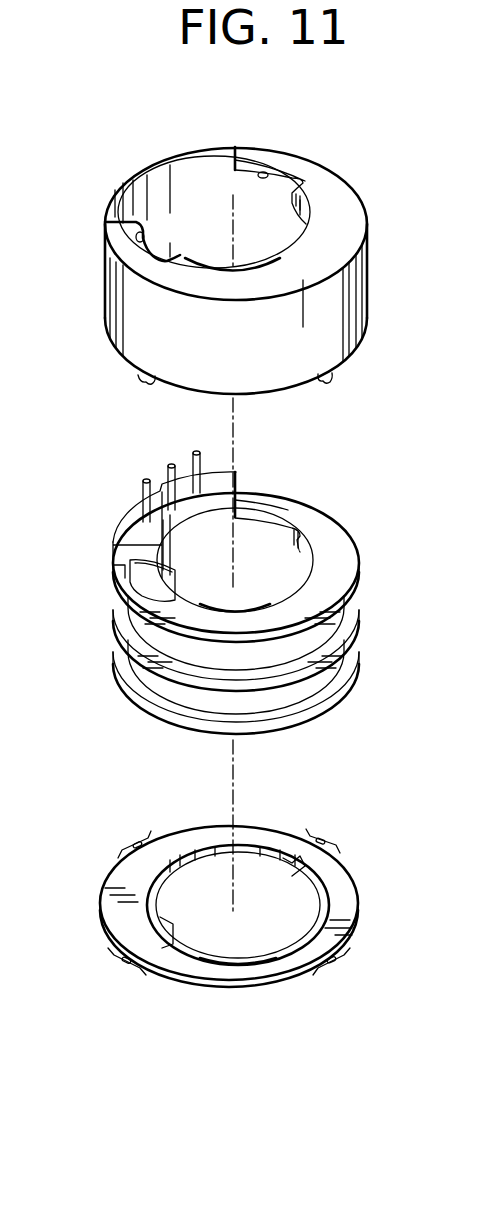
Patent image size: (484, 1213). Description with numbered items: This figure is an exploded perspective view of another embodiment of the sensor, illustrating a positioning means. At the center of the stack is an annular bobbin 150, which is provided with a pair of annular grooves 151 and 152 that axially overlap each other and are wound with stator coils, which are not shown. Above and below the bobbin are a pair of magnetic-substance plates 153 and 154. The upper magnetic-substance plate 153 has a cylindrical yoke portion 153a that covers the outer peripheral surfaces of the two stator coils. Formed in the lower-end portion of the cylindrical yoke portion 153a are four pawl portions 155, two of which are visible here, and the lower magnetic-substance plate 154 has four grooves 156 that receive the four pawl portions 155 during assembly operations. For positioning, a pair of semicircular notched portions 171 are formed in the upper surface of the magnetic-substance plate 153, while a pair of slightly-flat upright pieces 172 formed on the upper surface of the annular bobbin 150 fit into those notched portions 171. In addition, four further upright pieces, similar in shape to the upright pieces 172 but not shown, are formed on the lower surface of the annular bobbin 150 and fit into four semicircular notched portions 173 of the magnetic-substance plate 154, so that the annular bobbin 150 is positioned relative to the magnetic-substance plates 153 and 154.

The annular bobbin 150 is at (241, 601).
The annular groove 151 is at (296, 645).
The annular groove 152 is at (285, 697).
The magnetic-substance plate 153 is at (368, 217).
The cylindrical yoke portion 153a is at (268, 352).
The magnetic-substance plate 154 is at (352, 905).
The pawl portion 155 is at (142, 381).
The groove 156 is at (138, 845).
The semicircular notched portion 171 is at (266, 172).
The upright piece 172 is at (282, 525).
The semicircular notched portion 173 is at (203, 955).